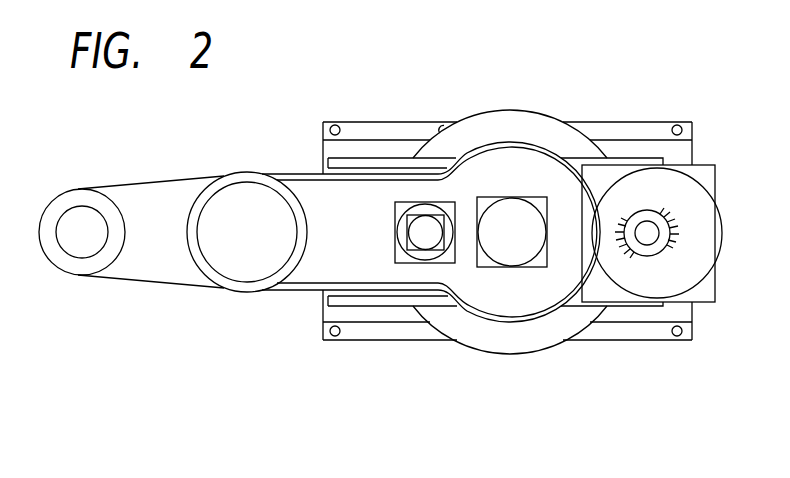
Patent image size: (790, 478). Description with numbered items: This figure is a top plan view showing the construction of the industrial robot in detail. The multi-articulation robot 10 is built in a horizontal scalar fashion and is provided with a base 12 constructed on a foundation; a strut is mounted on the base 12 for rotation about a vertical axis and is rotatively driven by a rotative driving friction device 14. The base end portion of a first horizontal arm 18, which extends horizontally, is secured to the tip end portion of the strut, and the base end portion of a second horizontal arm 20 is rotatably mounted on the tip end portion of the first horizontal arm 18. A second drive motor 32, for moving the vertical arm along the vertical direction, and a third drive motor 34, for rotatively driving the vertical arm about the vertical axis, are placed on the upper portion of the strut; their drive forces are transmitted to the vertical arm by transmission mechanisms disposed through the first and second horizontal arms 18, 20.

The multi-articulation robot 10 is at (641, 113).
The base 12 is at (593, 122).
The rotative driving friction device 14 is at (382, 312).
The first horizontal arm 18 is at (293, 182).
The second horizontal arm 20 is at (143, 190).
The second drive motor 32 is at (483, 197).
The third drive motor 34 is at (394, 205).